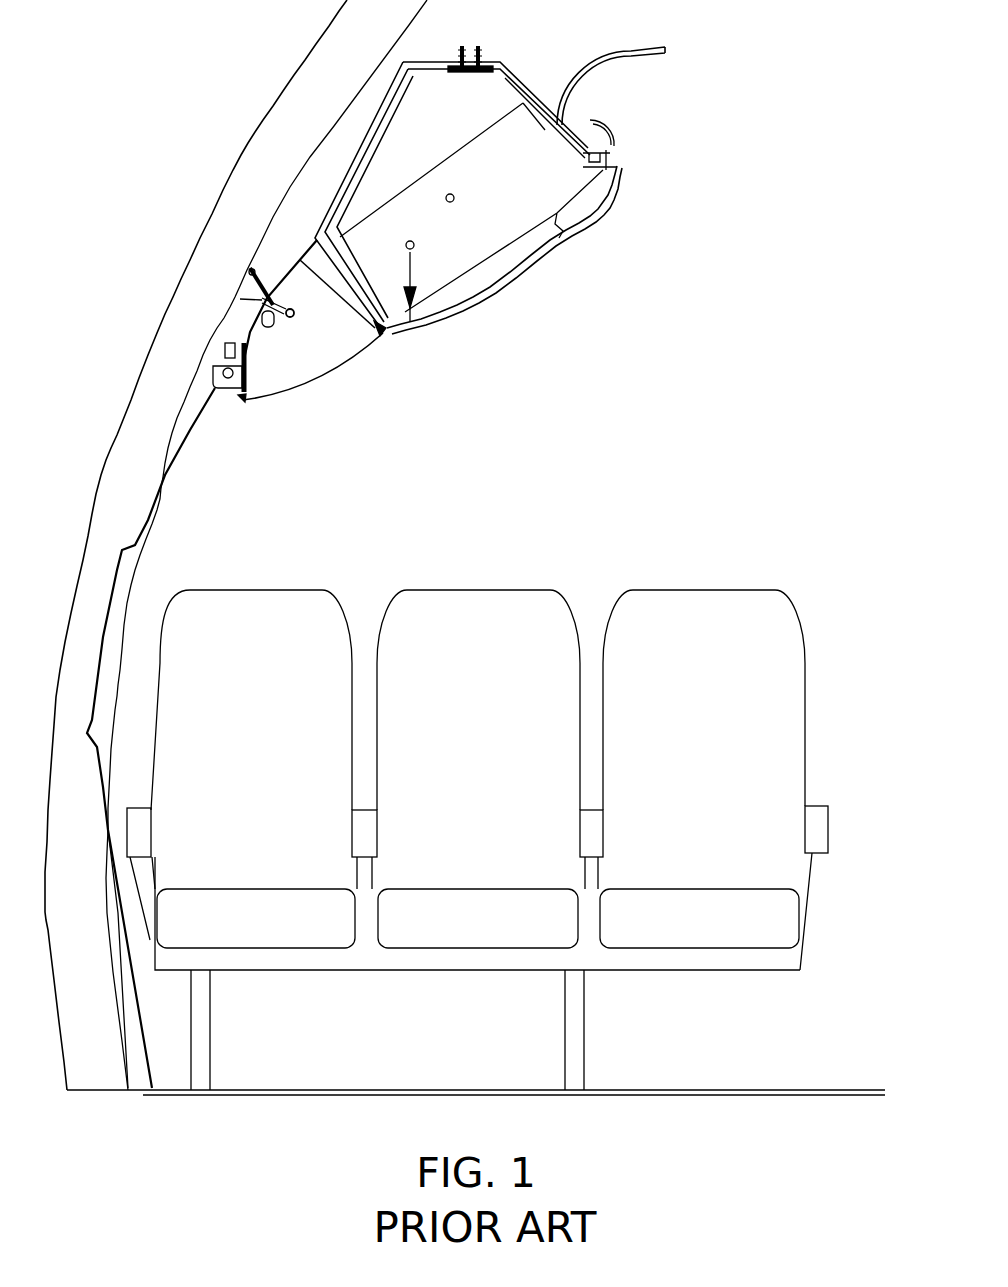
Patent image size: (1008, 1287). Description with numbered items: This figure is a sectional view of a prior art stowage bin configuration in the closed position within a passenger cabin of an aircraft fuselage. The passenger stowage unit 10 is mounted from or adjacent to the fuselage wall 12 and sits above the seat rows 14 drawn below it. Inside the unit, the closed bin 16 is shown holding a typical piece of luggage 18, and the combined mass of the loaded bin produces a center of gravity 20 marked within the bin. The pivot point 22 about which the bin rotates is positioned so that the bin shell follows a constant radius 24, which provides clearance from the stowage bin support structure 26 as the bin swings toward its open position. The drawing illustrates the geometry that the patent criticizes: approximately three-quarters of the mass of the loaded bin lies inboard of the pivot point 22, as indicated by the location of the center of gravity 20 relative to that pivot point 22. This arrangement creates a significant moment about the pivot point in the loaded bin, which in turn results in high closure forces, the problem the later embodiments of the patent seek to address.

The passenger stowage unit 10 is at (414, 345).
The fuselage wall 12 is at (233, 170).
The seat rows 14 is at (727, 634).
The closed bin 16 is at (550, 253).
The piece of luggage 18 is at (528, 180).
The center of gravity 20 is at (452, 190).
The pivot point 22 is at (410, 240).
The constant radius 24 is at (413, 268).
The stowage bin support structure 26 is at (352, 363).